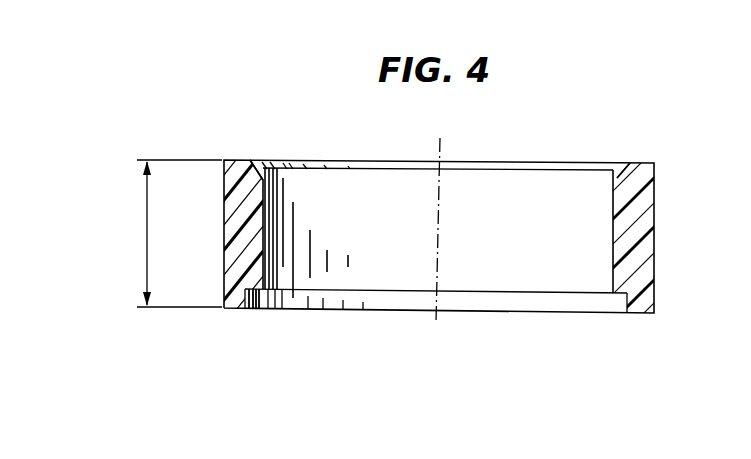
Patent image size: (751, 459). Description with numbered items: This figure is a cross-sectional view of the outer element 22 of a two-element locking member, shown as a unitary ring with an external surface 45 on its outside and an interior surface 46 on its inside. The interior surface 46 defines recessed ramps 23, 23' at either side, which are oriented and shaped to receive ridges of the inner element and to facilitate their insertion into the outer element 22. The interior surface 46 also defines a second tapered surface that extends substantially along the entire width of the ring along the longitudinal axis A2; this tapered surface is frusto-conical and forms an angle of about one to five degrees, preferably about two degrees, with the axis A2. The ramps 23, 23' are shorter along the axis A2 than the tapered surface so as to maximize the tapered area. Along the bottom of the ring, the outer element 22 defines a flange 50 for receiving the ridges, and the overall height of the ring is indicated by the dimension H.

The outer element 22 is at (644, 143).
The recessed ramp 23 is at (275, 139).
The recessed ramp 23' is at (610, 140).
The external surface 45 is at (225, 230).
The interior surface 46 is at (267, 223).
The flange 50 is at (253, 309).
The longitudinal axis A2 is at (442, 152).
The height dimension H is at (176, 233).